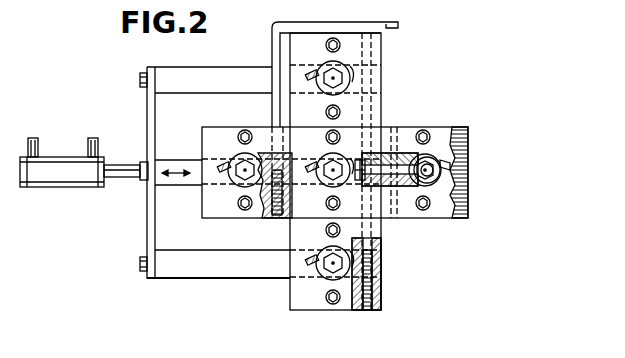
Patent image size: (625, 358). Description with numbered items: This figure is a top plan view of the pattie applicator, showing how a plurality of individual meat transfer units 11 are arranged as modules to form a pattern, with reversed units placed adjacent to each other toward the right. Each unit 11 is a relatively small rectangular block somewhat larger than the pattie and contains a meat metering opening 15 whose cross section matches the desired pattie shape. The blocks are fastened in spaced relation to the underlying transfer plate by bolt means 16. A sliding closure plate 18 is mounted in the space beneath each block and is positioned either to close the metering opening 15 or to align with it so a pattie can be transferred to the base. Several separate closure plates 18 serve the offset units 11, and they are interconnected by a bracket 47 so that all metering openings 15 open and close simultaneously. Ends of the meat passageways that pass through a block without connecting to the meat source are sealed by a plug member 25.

The meat transfer unit 11 is at (345, 60).
The meat metering opening 15 is at (433, 157).
The bolt means 16 is at (330, 227).
The sliding closure plate 18 is at (207, 88).
The plug member 25 is at (383, 281).
The bracket 47 is at (150, 213).